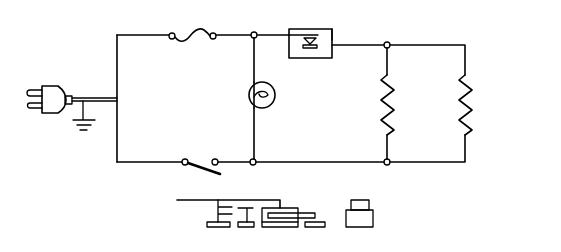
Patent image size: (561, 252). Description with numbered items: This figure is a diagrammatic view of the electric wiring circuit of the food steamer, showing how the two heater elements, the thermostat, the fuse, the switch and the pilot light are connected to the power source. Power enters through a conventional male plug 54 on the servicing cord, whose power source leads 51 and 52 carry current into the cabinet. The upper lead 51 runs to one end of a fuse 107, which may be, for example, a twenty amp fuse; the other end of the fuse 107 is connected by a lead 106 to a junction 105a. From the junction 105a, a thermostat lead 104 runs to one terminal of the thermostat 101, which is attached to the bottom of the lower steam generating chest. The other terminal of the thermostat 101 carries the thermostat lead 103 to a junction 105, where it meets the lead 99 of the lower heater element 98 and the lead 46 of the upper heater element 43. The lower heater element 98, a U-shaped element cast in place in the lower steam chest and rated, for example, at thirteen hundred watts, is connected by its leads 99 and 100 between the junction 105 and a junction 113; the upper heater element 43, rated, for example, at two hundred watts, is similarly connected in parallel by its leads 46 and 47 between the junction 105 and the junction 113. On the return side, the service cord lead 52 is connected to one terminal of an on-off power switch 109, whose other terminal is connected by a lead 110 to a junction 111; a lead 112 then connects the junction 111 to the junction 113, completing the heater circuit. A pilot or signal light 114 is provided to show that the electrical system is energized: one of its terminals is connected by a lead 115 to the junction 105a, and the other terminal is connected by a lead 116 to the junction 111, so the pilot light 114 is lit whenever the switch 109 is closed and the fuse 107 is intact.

The male plug 54 is at (52, 98).
The power source lead 51 is at (102, 98).
The power source lead 52 is at (111, 107).
The fuse 107 is at (204, 25).
The lead 106 is at (236, 39).
The junction 105a is at (252, 32).
The thermostat lead 104 is at (277, 33).
The thermostat 101 is at (340, 30).
The thermostat lead 103 is at (349, 48).
The junction 105 is at (391, 40).
The lead 99 is at (389, 63).
The lower heater element 98 is at (391, 111).
The lead 100 is at (390, 146).
The junction 113 is at (389, 166).
The lead 46 is at (470, 58).
The upper heater element 43 is at (470, 101).
The lead 47 is at (468, 142).
The lead 112 is at (320, 160).
The junction 111 is at (257, 158).
The lead 110 is at (240, 155).
The on-off power switch 109 is at (195, 171).
The lead 115 is at (252, 67).
The pilot light 114 is at (276, 98).
The lead 116 is at (252, 119).